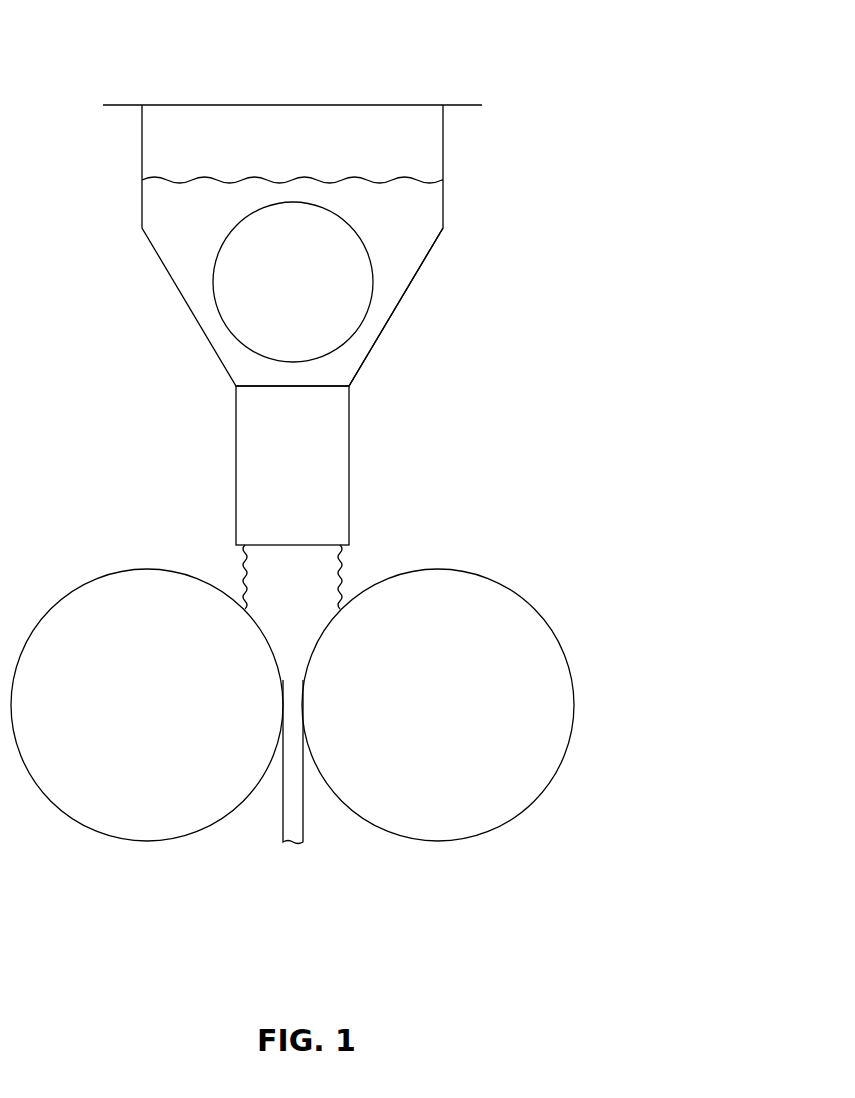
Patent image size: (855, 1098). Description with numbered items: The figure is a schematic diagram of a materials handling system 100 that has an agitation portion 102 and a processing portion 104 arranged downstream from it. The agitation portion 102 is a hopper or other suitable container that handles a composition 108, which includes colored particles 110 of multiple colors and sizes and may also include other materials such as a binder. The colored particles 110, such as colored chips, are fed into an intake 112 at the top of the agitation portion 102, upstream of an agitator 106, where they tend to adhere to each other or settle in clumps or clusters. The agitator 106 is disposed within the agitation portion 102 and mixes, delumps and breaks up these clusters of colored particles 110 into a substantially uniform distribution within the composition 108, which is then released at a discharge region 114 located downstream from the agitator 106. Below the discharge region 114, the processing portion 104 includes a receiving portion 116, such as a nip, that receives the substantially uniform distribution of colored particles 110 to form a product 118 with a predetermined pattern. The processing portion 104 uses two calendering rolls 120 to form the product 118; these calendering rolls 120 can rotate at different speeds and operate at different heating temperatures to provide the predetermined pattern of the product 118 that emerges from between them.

The materials handling system 100 is at (552, 148).
The agitation portion 102 is at (390, 102).
The processing portion 104 is at (570, 607).
The agitator 106 is at (362, 326).
The composition 108 is at (408, 230).
The colored particles 110 is at (408, 258).
The intake 112 is at (178, 105).
The discharge region 114 is at (343, 550).
The receiving portion 116 is at (302, 590).
The product 118 is at (305, 815).
The calendering rolls 120 is at (292, 705).